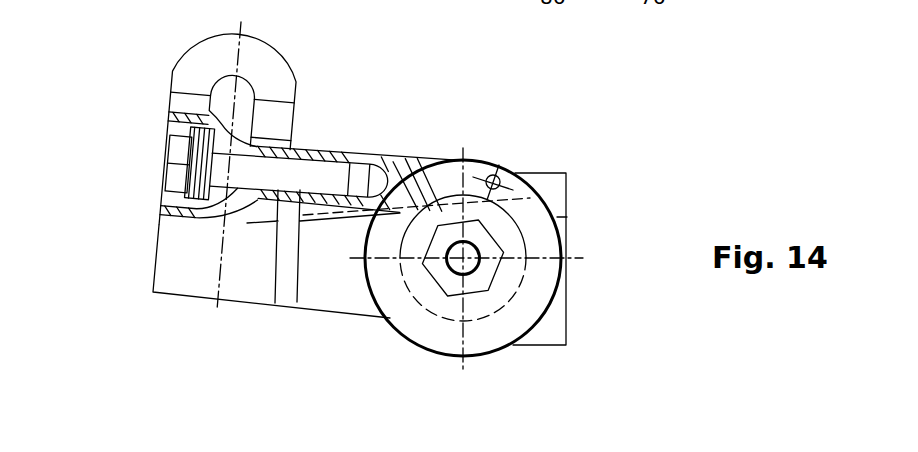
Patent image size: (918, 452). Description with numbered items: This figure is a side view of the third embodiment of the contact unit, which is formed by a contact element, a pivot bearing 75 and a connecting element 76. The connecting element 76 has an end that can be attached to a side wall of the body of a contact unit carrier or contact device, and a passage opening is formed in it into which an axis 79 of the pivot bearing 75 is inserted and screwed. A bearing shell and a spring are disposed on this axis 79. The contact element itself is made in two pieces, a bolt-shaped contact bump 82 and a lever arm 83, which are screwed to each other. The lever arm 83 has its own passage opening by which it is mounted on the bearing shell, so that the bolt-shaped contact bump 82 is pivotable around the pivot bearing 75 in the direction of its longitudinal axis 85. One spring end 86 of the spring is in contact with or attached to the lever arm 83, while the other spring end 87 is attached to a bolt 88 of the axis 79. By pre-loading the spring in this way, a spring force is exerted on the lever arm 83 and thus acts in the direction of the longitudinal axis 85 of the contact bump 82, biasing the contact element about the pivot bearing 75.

The bolt-shaped contact bump 82 is at (260, 67).
The lever arm 83 is at (317, 278).
The longitudinal axis 85 is at (217, 248).
The spring end 86 is at (263, 223).
The pivot bearing 75 is at (483, 268).
The connecting element 76 is at (558, 192).
The axis 79 is at (545, 242).
The spring end 87 is at (531, 202).
The bolt 88 is at (489, 175).